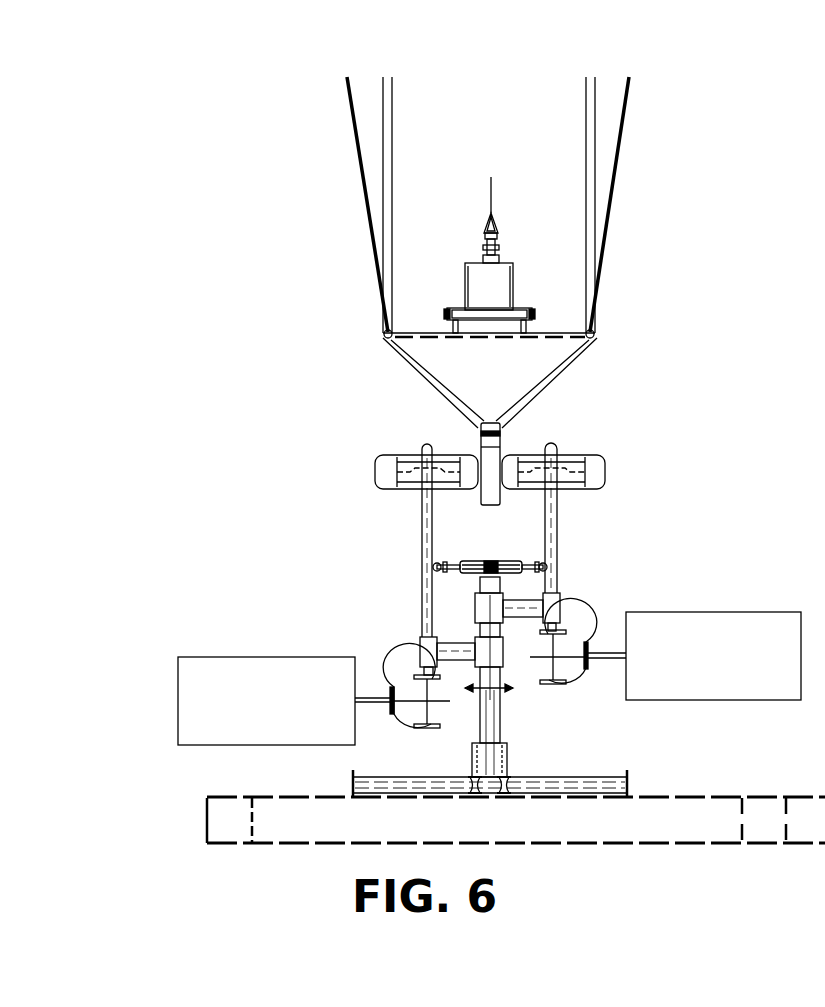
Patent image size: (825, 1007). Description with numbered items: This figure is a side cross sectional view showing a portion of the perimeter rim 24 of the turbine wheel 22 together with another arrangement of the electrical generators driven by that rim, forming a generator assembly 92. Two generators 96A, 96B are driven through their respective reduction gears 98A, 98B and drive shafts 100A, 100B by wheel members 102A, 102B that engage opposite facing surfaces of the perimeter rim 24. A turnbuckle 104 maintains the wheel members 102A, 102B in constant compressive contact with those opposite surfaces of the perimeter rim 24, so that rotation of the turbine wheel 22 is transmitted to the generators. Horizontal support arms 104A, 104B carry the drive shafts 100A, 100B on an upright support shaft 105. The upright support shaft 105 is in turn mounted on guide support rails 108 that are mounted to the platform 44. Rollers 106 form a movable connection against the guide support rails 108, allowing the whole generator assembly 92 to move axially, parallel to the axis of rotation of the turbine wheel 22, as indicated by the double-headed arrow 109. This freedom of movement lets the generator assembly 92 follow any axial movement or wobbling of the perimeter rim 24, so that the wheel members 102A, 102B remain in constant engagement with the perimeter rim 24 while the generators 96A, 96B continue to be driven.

The turbine wheel 22 is at (640, 250).
The perimeter rim 24 is at (500, 447).
The generator assembly 92 is at (749, 399).
The platform 44 is at (620, 834).
The generator 96A is at (293, 658).
The generator 96B is at (760, 612).
The reduction gear 98A is at (398, 718).
The reduction gear 98B is at (575, 670).
The drive shaft 100A is at (424, 567).
The drive shaft 100B is at (553, 538).
The wheel member 102A is at (383, 465).
The wheel member 102B is at (598, 466).
The turnbuckle 104 is at (500, 560).
The horizontal support arm 104A is at (455, 645).
The horizontal support arm 104B is at (525, 601).
The upright support shaft 105 is at (496, 691).
The rollers 106 is at (470, 780).
The guide support rails 108 is at (545, 782).
The double-headed arrow 109 is at (482, 692).